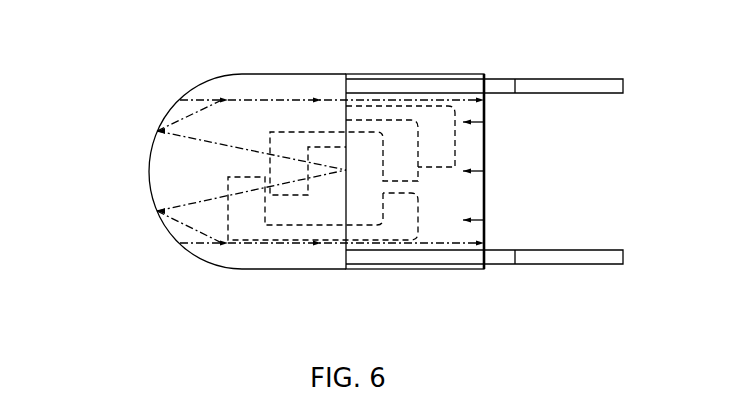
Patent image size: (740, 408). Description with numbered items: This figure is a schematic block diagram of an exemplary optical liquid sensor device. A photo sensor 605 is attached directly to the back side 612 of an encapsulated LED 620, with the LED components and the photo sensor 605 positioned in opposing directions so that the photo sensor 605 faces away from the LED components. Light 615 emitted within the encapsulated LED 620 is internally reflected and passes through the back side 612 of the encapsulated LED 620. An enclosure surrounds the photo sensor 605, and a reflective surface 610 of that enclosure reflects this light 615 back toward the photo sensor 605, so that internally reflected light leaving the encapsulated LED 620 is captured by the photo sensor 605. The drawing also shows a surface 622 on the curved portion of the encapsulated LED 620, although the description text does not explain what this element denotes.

The photo sensor 605 is at (419, 108).
The reflective surface 610 is at (494, 172).
The back side 612 is at (355, 270).
The light 615 is at (168, 236).
The encapsulated LED 620 is at (211, 143).
The lens surface 622 is at (152, 193).